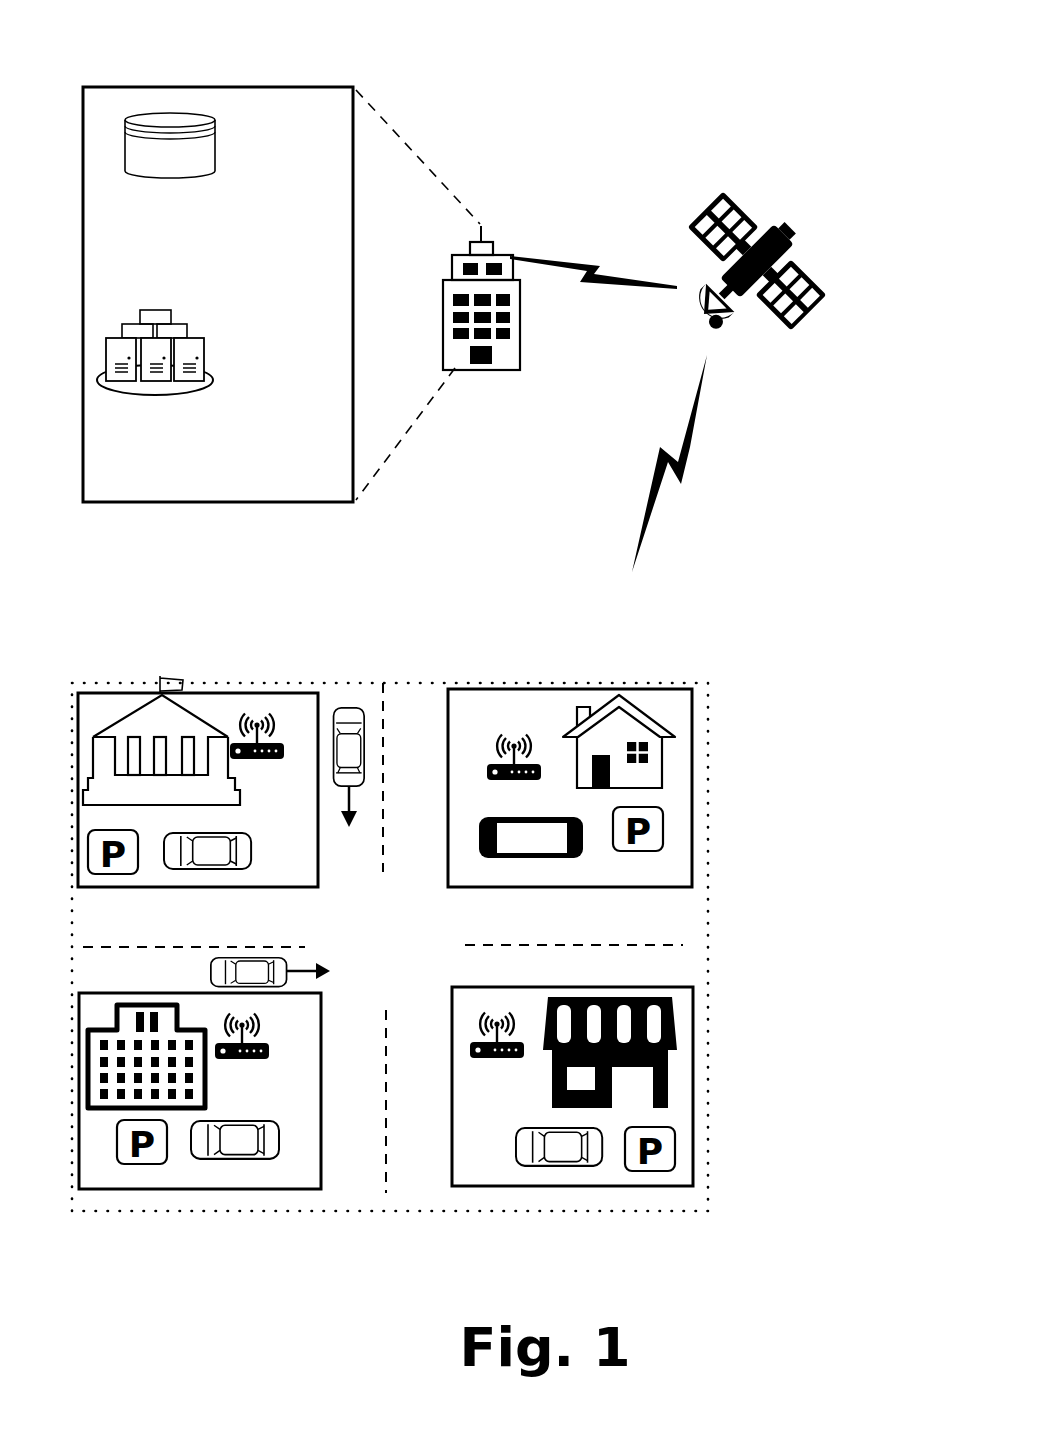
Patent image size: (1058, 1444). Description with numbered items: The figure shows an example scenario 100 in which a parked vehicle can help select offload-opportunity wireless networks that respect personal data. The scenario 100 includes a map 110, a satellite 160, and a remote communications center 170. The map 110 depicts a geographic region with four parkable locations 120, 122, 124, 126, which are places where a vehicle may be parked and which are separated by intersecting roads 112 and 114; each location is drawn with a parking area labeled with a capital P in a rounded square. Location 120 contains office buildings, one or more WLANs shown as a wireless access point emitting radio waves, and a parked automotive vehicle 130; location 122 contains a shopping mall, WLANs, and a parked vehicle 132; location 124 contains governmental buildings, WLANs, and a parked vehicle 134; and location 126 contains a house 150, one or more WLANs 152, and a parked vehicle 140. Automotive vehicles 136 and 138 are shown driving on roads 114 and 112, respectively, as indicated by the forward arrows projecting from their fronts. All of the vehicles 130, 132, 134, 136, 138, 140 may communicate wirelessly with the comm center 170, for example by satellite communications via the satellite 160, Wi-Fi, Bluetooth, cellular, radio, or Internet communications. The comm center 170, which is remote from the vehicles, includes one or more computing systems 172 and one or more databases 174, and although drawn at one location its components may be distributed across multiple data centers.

The example scenario 100 is at (768, 63).
The map 110 is at (733, 1151).
The road 112 is at (360, 1197).
The road 114 is at (705, 954).
The parkable location 120 is at (142, 1191).
The parkable location 122 is at (563, 1187).
The parkable location 124 is at (255, 690).
The parkable location 126 is at (560, 688).
The automotive vehicle 130 is at (223, 1137).
The automotive vehicle 132 is at (537, 1137).
The automotive vehicle 134 is at (203, 840).
The automotive vehicle 136 is at (240, 957).
The automotive vehicle 138 is at (346, 712).
The parked vehicle 140 is at (513, 849).
The house 150 is at (657, 720).
The WLAN 152 is at (488, 765).
The satellite 160 is at (760, 228).
The remote communications center 170 is at (495, 375).
The computing system 172 is at (209, 362).
The database 174 is at (165, 180).